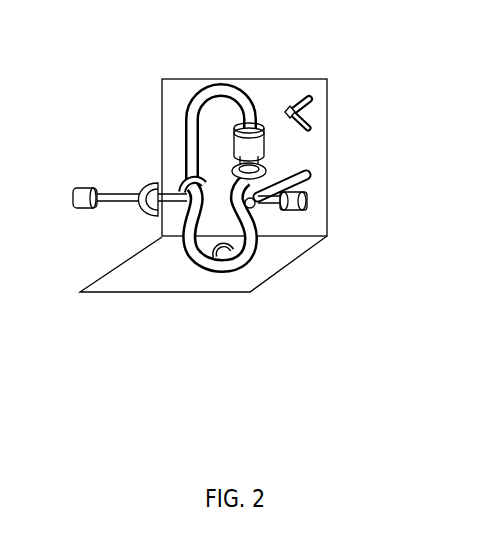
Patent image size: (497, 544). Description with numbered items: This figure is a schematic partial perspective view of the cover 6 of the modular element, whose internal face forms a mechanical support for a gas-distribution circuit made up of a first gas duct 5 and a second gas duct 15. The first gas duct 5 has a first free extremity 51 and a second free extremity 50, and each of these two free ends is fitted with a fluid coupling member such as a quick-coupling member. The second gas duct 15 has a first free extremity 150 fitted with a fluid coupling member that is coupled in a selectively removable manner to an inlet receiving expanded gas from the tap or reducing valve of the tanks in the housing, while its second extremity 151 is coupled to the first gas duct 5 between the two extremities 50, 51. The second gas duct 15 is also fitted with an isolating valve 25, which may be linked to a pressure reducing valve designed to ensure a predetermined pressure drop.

The first gas duct 5 is at (228, 270).
The cover 6 is at (328, 166).
The second gas duct 15 is at (166, 217).
The isolating valve 25 is at (266, 98).
The second free extremity 50 is at (80, 212).
The first free extremity 51 is at (322, 199).
The first free extremity 150 is at (274, 165).
The second extremity 151 is at (192, 250).